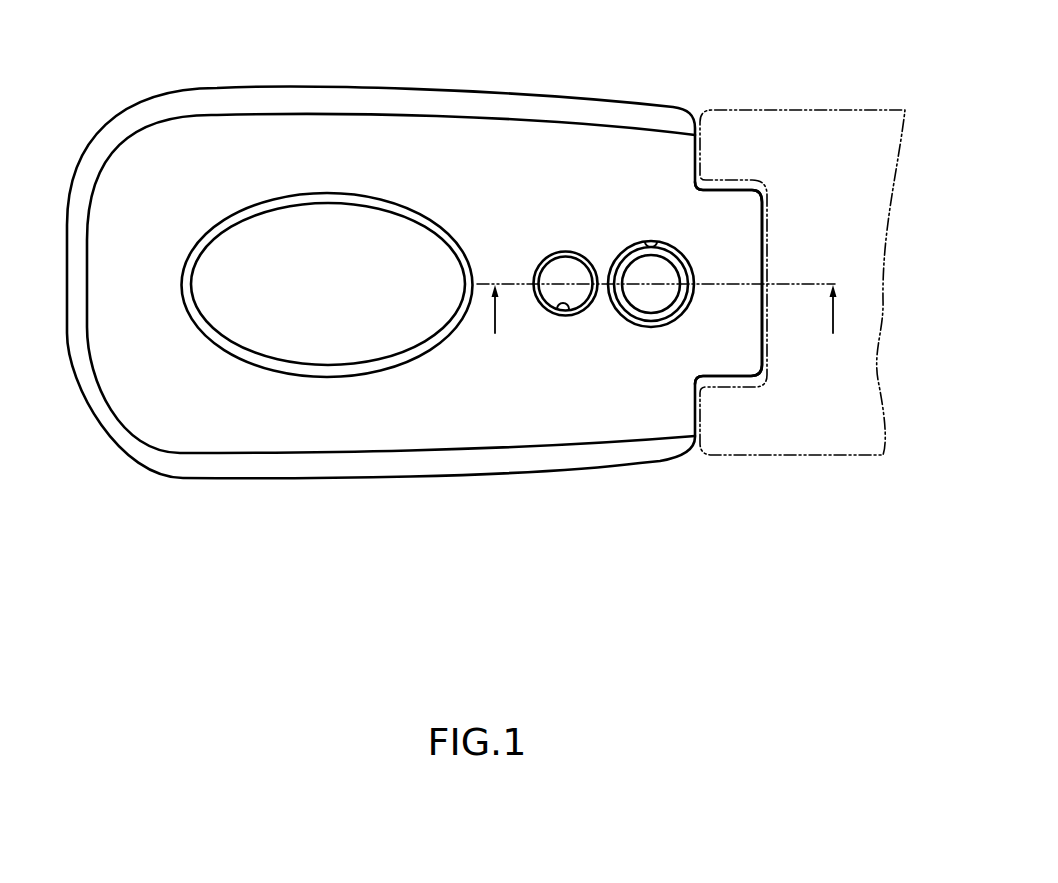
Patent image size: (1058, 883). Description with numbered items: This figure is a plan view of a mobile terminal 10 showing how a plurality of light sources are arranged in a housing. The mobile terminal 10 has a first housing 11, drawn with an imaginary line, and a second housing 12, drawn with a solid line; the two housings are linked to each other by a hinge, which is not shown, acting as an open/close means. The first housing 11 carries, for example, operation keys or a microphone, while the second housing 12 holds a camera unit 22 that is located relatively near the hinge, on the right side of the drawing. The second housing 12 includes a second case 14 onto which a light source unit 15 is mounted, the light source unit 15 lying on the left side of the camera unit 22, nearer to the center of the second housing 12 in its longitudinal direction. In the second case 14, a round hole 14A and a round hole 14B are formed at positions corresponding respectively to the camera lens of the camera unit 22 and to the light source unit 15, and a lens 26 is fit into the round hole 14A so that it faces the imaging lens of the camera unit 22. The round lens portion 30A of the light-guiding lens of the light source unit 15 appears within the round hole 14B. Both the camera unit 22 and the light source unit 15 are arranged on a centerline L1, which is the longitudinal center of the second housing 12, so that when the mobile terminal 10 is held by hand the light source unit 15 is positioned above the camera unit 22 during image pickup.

The mobile terminal 10 is at (653, 550).
The first housing 11 is at (832, 462).
The second housing 12 is at (240, 85).
The second case 14 is at (377, 469).
The round hole 14A is at (660, 242).
The round hole 14B is at (570, 308).
The light source unit 15 is at (565, 248).
The camera unit 22 is at (645, 331).
The lens 26 is at (657, 300).
The round lens portion 30A is at (577, 273).
The centerline L1 is at (513, 287).